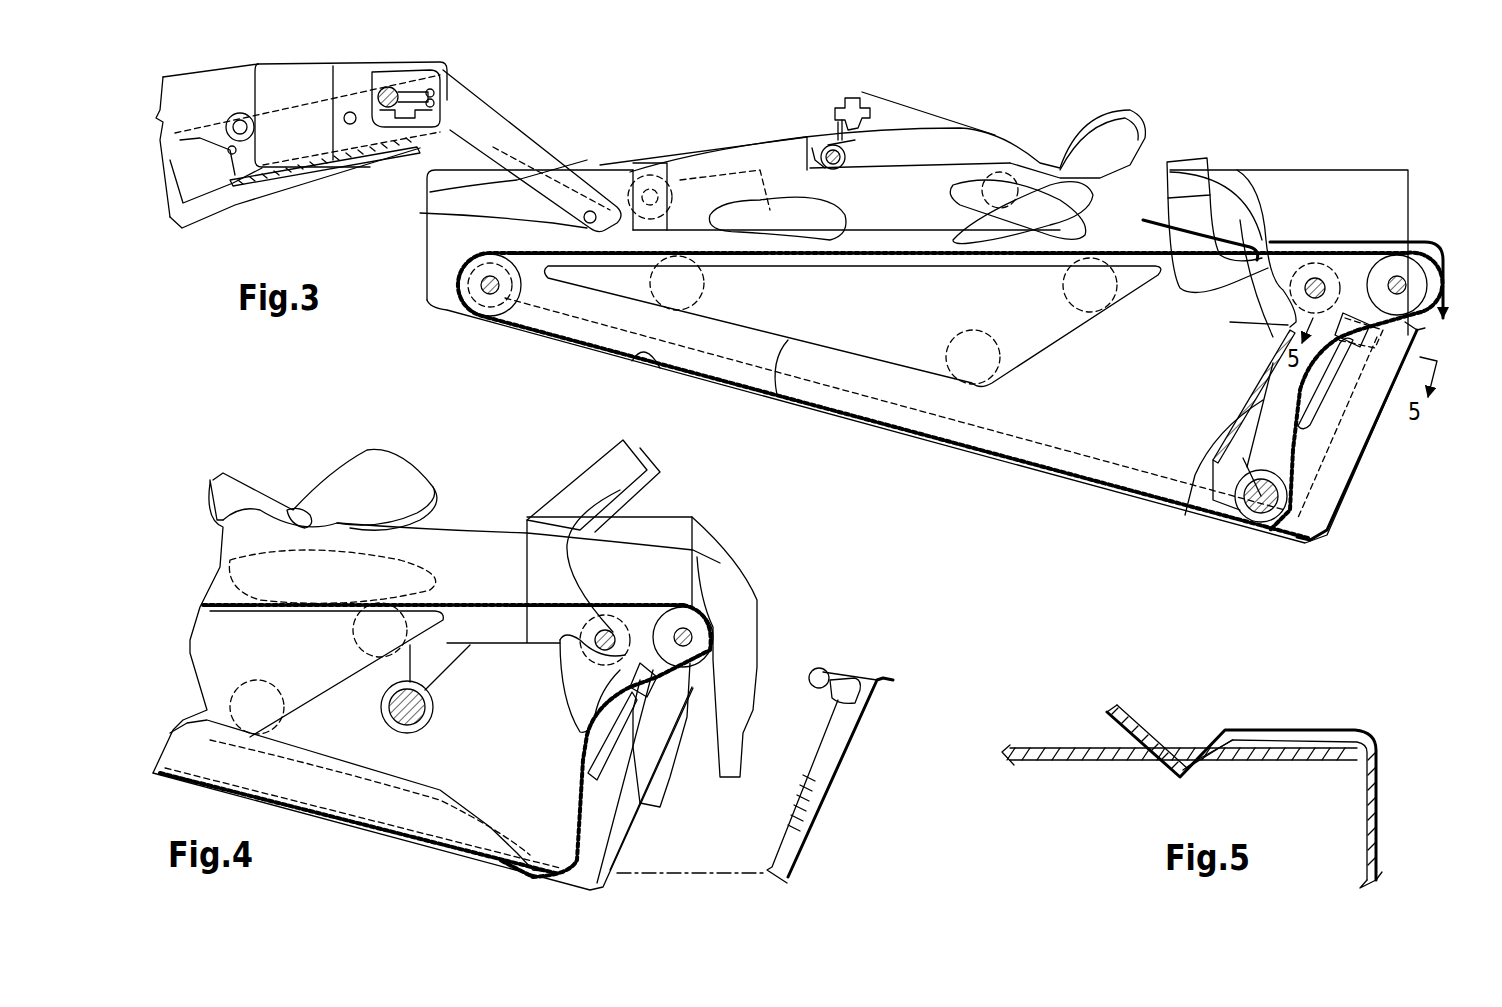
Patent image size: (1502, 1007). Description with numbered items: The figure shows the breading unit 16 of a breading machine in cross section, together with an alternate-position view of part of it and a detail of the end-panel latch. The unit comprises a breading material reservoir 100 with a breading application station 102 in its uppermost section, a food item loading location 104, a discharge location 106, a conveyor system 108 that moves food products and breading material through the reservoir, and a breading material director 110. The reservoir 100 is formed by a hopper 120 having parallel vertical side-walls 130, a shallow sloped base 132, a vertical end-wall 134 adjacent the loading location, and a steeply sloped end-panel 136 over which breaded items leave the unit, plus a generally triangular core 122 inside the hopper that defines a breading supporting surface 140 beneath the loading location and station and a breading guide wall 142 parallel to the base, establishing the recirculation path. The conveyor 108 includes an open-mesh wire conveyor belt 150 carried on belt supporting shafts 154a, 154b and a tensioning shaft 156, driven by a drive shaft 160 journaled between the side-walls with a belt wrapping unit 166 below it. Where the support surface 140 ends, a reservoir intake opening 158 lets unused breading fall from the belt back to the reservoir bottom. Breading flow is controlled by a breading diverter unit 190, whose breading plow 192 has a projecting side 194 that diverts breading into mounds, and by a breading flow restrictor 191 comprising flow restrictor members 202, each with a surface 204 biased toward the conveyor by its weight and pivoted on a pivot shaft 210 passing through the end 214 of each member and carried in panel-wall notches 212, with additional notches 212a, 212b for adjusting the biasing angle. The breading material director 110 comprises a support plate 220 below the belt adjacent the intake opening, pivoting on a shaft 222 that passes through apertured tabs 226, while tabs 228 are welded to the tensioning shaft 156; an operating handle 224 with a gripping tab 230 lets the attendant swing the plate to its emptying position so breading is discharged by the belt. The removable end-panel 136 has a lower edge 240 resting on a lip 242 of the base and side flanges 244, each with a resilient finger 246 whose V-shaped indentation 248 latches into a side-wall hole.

In FIG. 3, the breading unit 16 is at (640, 105).
In FIG. 3, the breading material reservoir 100 is at (860, 430).
In FIG. 3, the breading application station 102 is at (1152, 145).
In FIG. 3, the food item loading location 104 is at (567, 125).
In FIG. 3, the discharge location 106 is at (1415, 210).
In FIG. 3, the conveyor system 108 is at (508, 250).
In FIG. 3, the breading material director 110 is at (1350, 370).
In FIG. 3, the breading pan or hopper 120 is at (1033, 473).
In FIG. 3, the core 122 is at (926, 338).
In FIG. 4, the side-walls 130 is at (603, 810).
In FIG. 3, the base 132 is at (677, 370).
In FIG. 3, the end-wall 134 is at (427, 265).
In FIG. 3, the end-panel 136 is at (1357, 453).
In FIG. 4, the end-panel 136 is at (837, 773).
In FIG. 3, the breading supporting surface 140 is at (887, 245).
In FIG. 3, the breading guide wall 142 is at (628, 360).
In FIG. 3, the conveyor belt 150 is at (1313, 252).
In FIG. 3, the belt supporting shaft 154a is at (480, 297).
In FIG. 3, the belt supporting shaft 154b is at (1262, 500).
In FIG. 4, the tensioning shaft 156 is at (415, 728).
In FIG. 3, the reservoir intake opening 158 is at (1135, 225).
In FIG. 3, the drive shaft 160 is at (1462, 235).
In FIG. 3, the belt wrapping unit 166 is at (1417, 327).
In FIG. 3, the breading diverter unit 190 is at (483, 95).
In FIG. 3, the breading flow restrictor 191 is at (1060, 98).
In FIG. 3, the breading plow 192 is at (440, 163).
In FIG. 3, the projecting side 194 is at (420, 213).
In FIG. 3, the flow restrictor members 202 is at (967, 128).
In FIG. 4, the flow restrictor members 202 is at (343, 487).
In FIG. 3, the surface 204 is at (1010, 163).
In FIG. 4, the surface 204 is at (287, 510).
In FIG. 3, the pivot shaft 210 is at (828, 147).
In FIG. 3, the panel-wall notches 212 is at (800, 142).
In FIG. 3, the additional notch 212a is at (830, 148).
In FIG. 3, the additional notch 212b is at (850, 100).
In FIG. 3, the end of restrictor member 214 is at (860, 167).
In FIG. 3, the breading material support plate 220 is at (1190, 500).
In FIG. 3, the shaft 222 is at (1320, 282).
In FIG. 3, the operating handle 224 is at (1190, 207).
In FIG. 4, the operating handle 224 is at (600, 487).
In FIG. 3, the apertured tabs 226 is at (1283, 237).
In FIG. 3, the tabs 228 is at (1243, 458).
In FIG. 3, the gripping tab 230 is at (1183, 158).
In FIG. 4, the gripping tab 230 is at (650, 460).
In FIG. 4, the lower edge 240 is at (790, 883).
In FIG. 3, the lip 242 is at (1325, 532).
In FIG. 4, the lip 242 is at (612, 877).
In FIG. 4, the side flanges 244 is at (833, 737).
In FIG. 5, the side flanges 244 is at (1297, 730).
In FIG. 4, the finger 246 is at (830, 680).
In FIG. 5, the finger 246 is at (1127, 707).
In FIG. 4, the V-shaped indentation 248 is at (817, 690).
In FIG. 5, the V-shaped indentation 248 is at (1123, 750).